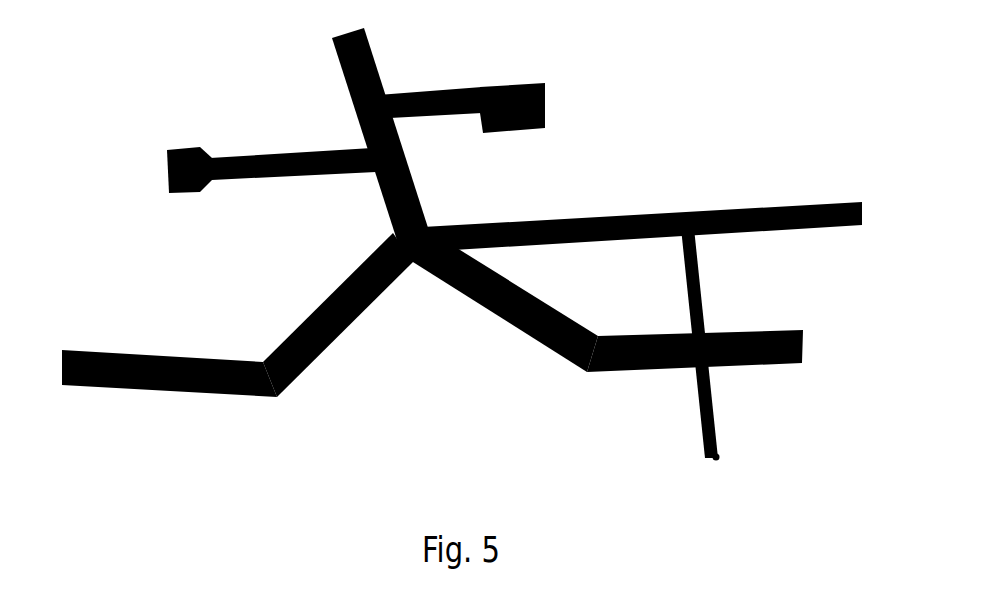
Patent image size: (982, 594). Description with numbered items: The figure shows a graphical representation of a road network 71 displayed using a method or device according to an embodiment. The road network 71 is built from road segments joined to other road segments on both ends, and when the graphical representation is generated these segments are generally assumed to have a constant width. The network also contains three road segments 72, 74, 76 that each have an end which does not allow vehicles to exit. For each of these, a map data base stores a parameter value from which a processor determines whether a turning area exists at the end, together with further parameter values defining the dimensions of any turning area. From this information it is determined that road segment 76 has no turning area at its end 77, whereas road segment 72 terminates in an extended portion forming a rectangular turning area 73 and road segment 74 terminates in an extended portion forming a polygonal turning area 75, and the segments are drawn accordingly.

The road network 71 is at (624, 68).
The road segment 72 is at (462, 90).
The rectangular turning area 73 is at (547, 125).
The road segment 74 is at (263, 175).
The polygonal turning area 75 is at (187, 193).
The road segment 76 is at (712, 407).
The end of road segment 77 is at (718, 457).